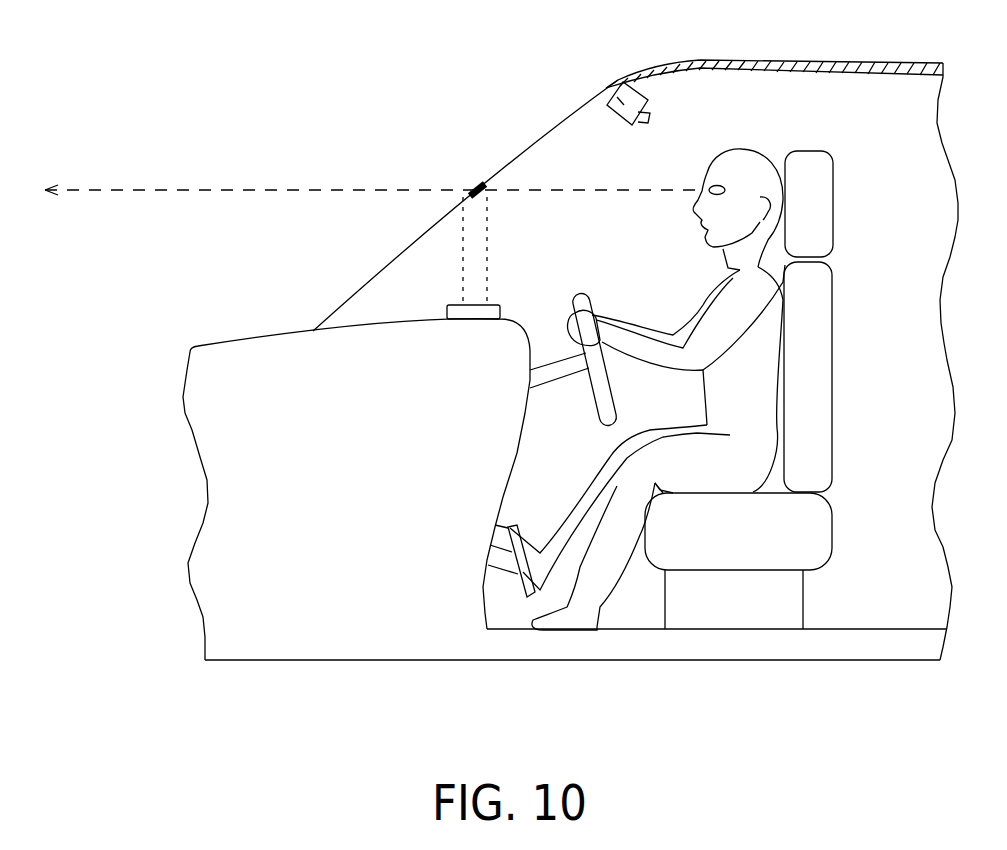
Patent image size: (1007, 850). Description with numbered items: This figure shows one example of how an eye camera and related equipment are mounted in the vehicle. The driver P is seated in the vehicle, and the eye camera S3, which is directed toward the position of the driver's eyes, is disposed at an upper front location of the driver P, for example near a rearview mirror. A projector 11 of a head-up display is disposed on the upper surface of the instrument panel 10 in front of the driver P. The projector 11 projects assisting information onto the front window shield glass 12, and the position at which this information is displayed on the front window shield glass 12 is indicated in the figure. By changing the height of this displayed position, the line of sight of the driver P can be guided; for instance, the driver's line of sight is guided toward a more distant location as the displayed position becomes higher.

The instrument panel 10 is at (400, 322).
The projector 11 is at (500, 307).
The front window shield glass 12 is at (553, 123).
The eye camera S3 is at (620, 97).
The driver P is at (750, 160).